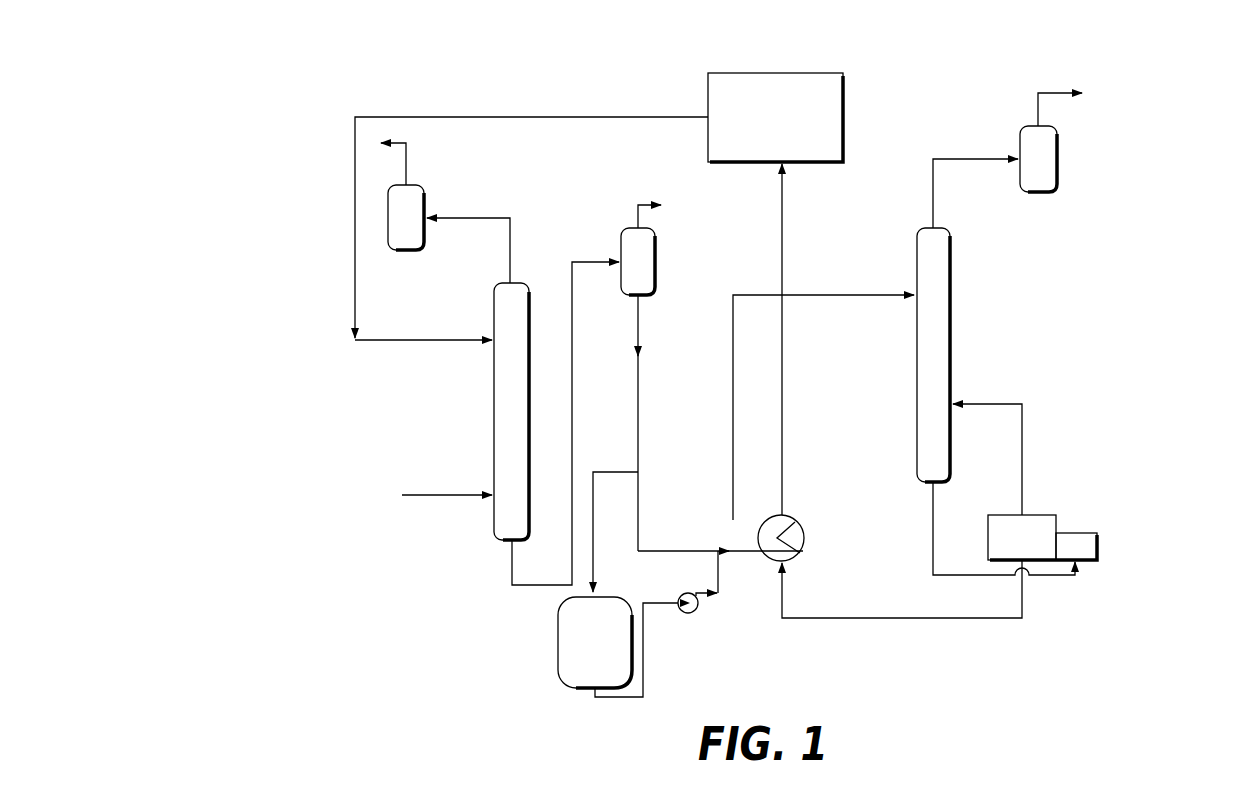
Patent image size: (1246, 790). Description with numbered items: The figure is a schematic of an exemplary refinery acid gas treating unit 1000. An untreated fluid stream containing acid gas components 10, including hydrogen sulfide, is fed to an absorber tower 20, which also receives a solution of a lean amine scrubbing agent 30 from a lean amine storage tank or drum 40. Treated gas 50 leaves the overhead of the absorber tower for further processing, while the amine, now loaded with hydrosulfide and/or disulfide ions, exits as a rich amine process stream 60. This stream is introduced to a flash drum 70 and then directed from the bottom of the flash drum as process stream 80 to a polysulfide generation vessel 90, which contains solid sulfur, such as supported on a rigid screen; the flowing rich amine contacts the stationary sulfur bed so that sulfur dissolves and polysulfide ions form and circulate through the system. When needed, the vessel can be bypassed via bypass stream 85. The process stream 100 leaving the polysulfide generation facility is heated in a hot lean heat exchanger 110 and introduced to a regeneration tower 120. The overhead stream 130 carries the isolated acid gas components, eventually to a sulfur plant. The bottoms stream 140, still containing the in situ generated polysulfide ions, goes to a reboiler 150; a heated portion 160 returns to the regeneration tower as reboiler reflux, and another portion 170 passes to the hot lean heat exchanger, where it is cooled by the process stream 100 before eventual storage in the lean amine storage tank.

The refinery acid gas treating unit 1000 is at (284, 82).
The untreated fluid stream 10 is at (453, 497).
The absorber tower 20 is at (494, 432).
The lean amine scrubbing agent 30 is at (380, 342).
The lean amine storage tank 40 is at (844, 88).
The treated gas 50 is at (511, 241).
The rich amine process stream 60 is at (520, 587).
The flash drum 70 is at (658, 236).
The process stream from flash drum bottom 80 is at (640, 390).
The bypass stream 85 is at (640, 524).
The polysulfide generation vessel 90 is at (557, 668).
The process stream 100 is at (742, 554).
The hot lean heat exchanger 110 is at (800, 523).
The regeneration tower 120 is at (952, 270).
The overhead stream 130 is at (963, 158).
The regeneration tower bottom process stream 140 is at (934, 520).
The reboiler 150 is at (1058, 518).
The heated process stream portion 160 is at (1023, 437).
The hot lean amine portion 170 is at (921, 619).